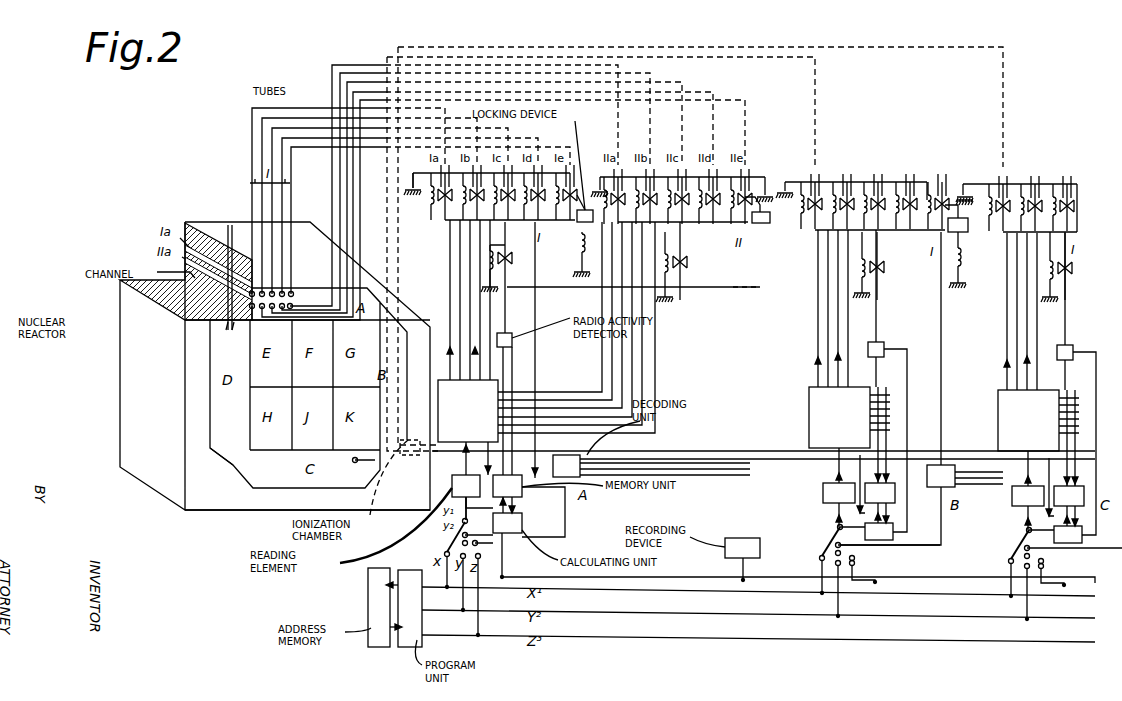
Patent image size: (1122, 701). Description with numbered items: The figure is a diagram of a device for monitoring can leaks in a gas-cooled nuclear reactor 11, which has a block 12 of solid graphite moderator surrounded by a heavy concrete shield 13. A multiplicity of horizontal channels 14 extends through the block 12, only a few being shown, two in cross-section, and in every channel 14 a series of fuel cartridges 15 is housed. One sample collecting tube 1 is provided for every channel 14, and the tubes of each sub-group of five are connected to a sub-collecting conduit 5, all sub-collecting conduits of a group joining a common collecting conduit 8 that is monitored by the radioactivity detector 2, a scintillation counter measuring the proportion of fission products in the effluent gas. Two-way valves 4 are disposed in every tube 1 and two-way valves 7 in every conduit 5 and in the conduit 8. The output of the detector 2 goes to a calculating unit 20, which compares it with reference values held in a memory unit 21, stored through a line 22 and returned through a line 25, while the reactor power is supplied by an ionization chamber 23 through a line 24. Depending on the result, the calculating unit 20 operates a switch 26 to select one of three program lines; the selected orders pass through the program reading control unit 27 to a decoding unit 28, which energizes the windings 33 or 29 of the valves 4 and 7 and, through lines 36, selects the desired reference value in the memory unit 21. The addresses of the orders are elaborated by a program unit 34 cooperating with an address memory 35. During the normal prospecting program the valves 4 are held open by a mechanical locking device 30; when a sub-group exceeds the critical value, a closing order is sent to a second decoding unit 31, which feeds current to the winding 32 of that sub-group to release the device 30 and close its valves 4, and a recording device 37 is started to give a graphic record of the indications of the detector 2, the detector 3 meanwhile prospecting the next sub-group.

The sample collecting tube 1 is at (252, 163).
The radioactivity detector 2 is at (510, 345).
The detector 3 is at (480, 543).
The two-way valve 4 is at (442, 200).
The sub-collecting conduit 5 is at (455, 228).
The two-way valve 7 is at (513, 258).
The collecting conduit 8 is at (592, 288).
The nuclear reactor 11 is at (290, 513).
The block of solid moderator 12 is at (255, 478).
The shield 13 is at (384, 497).
The channel 14 is at (231, 226).
The cartridge 15 is at (230, 331).
The calculating unit 20 is at (794, 540).
The memory unit 21 is at (507, 486).
The line 22 is at (479, 506).
The ionization chamber 23 is at (415, 456).
The line 24 is at (463, 460).
The line 25 is at (543, 512).
The switch 26 is at (462, 538).
The program reading control unit 27 is at (466, 486).
The decoding unit 28 is at (546, 349).
The winding 29 is at (488, 262).
The locking device 30 is at (585, 208).
The decoding unit 31 is at (565, 520).
The winding 32 is at (590, 252).
The winding 33 is at (413, 195).
The program unit 34 is at (407, 570).
The address memory 35 is at (368, 590).
The lines 36 is at (504, 382).
The recording device 37 is at (748, 538).